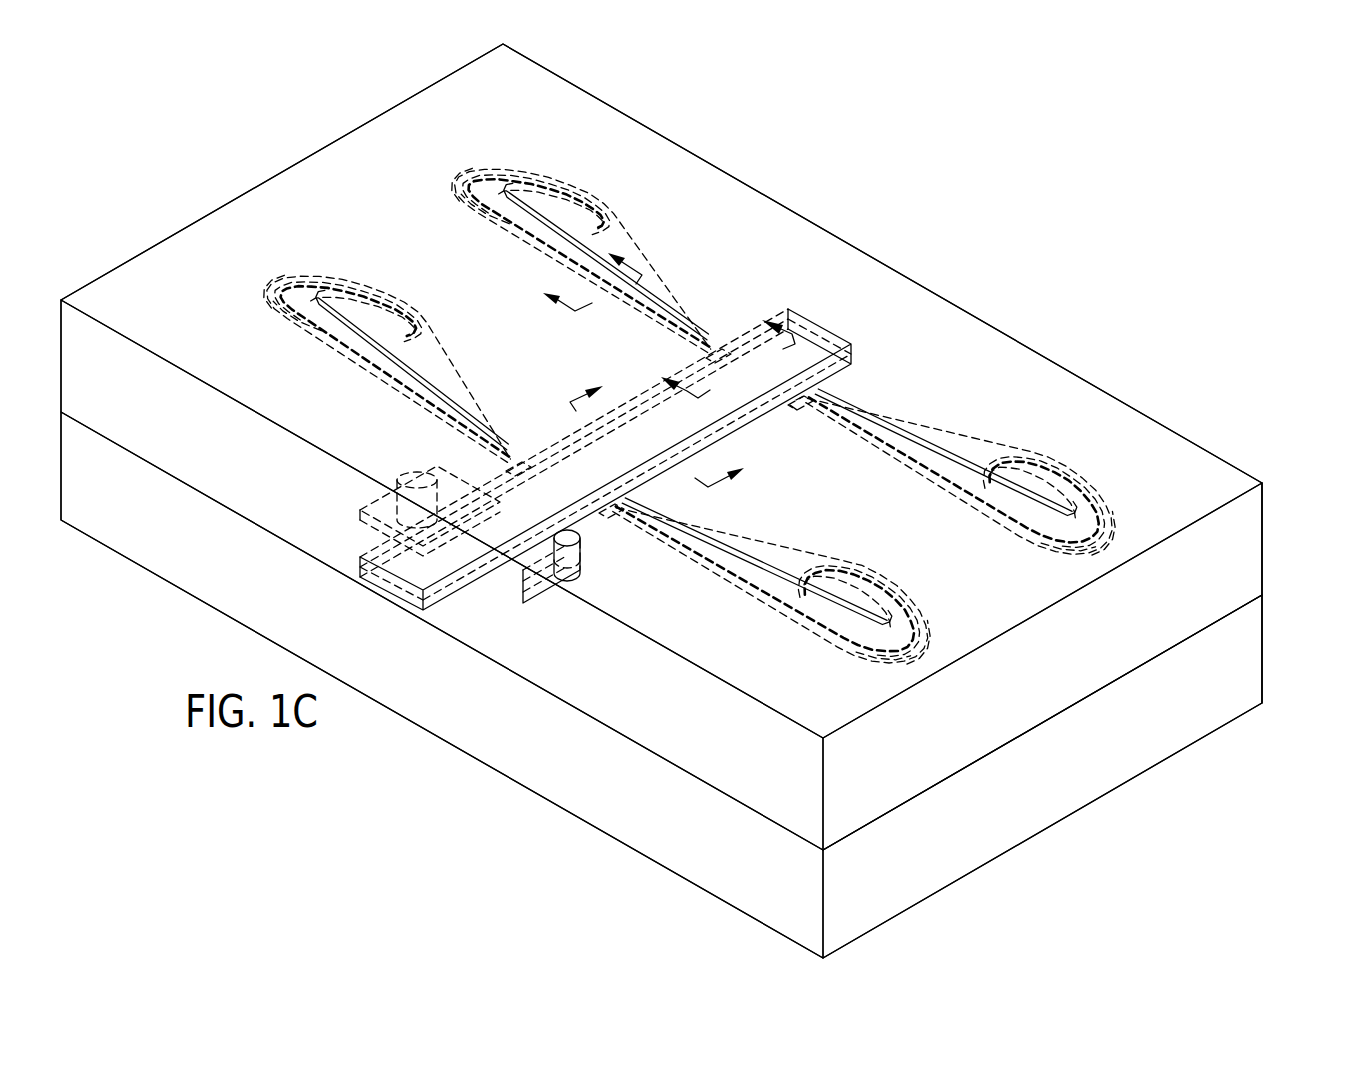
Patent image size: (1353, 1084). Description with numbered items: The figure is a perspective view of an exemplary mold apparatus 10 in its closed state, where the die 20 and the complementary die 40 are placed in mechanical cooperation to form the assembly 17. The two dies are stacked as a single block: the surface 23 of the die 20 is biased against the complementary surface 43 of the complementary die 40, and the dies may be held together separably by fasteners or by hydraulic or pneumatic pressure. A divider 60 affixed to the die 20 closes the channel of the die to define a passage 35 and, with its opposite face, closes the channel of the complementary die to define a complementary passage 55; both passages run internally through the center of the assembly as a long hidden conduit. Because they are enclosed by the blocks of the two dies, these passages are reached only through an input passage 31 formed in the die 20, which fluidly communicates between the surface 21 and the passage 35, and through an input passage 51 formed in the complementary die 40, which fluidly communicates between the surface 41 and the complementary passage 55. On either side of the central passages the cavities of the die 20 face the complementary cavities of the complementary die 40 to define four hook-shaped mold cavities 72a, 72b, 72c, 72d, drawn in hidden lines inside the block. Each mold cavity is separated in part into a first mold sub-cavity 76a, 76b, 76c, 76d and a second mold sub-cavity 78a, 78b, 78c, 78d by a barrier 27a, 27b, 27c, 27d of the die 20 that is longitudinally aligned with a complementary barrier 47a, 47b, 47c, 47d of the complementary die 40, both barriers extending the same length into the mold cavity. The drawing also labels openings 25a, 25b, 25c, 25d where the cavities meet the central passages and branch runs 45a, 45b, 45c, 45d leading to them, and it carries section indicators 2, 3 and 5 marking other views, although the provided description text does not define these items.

The mold apparatus 10 is at (1198, 104).
The assembly 17 is at (294, 182).
The die 20 is at (477, 740).
The surface 21 is at (956, 881).
The surface 23 is at (1068, 707).
The complementary die 40 is at (818, 238).
The surface 41 is at (1190, 452).
The complementary surface 43 is at (1232, 612).
The passage 35 is at (750, 406).
The complementary passage 55 is at (796, 400).
The divider 60 is at (790, 405).
The input passage 31 is at (372, 476).
The input passage 51 is at (580, 530).
The section line 2 is at (720, 350).
The section line 3 is at (665, 426).
The section line 5 is at (583, 273).
The channel opening a 25a is at (718, 347).
The channel opening b 25b is at (520, 462).
The channel opening c 25c is at (810, 397).
The channel opening d 25d is at (622, 506).
The barrier 27a is at (540, 170).
The barrier 27b is at (350, 285).
The barrier 27c is at (1110, 492).
The barrier 27d is at (923, 600).
The branch channel a 45a is at (708, 350).
The branch channel b 45b is at (506, 463).
The branch channel c 45c is at (800, 414).
The branch channel d 45d is at (616, 522).
The complementary barrier 47a is at (473, 186).
The complementary barrier 47b is at (286, 292).
The complementary barrier 47c is at (1054, 553).
The complementary barrier 47d is at (878, 656).
The mold cavity 72a is at (455, 206).
The mold cavity 72b is at (262, 313).
The mold cavity 72c is at (1068, 462).
The mold cavity 72d is at (883, 567).
The first mold sub-cavity 76a is at (521, 218).
The first mold sub-cavity 76b is at (332, 326).
The first mold sub-cavity 76c is at (1012, 517).
The first mold sub-cavity 76d is at (823, 627).
The second mold sub-cavity 78a is at (458, 230).
The second mold sub-cavity 78b is at (268, 338).
The second mold sub-cavity 78c is at (1005, 532).
The second mold sub-cavity 78d is at (813, 645).